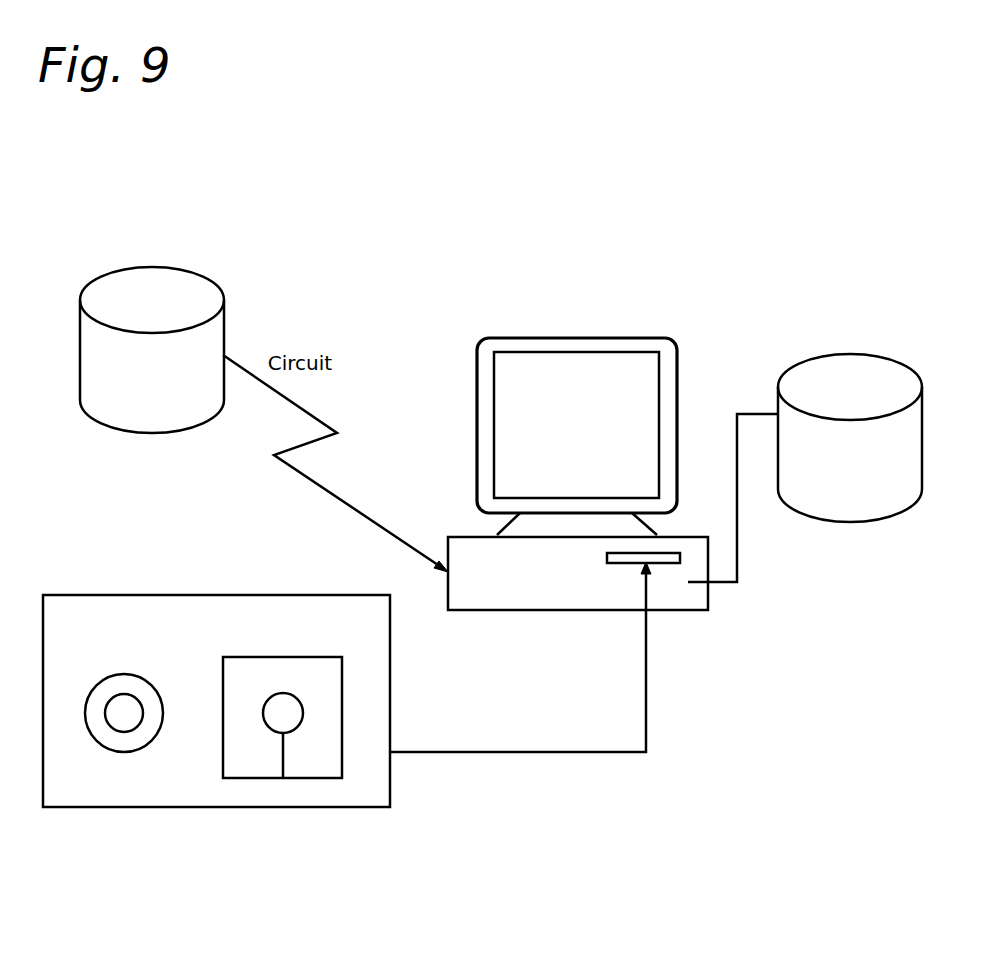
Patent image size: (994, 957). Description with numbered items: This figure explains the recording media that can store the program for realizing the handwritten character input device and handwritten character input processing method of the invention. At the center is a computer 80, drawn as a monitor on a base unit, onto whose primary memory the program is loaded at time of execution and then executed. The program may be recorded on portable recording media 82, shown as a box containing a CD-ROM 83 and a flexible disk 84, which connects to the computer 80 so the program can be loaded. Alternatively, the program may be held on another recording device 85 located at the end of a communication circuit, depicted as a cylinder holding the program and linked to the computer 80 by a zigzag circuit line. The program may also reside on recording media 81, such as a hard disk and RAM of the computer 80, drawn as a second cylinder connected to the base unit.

The computer 80 is at (608, 337).
The recording media 81 is at (855, 352).
The portable recording media 82 is at (127, 593).
The CD-ROM 83 is at (112, 753).
The flexible disk 84 is at (262, 770).
The recording device 85 is at (182, 270).